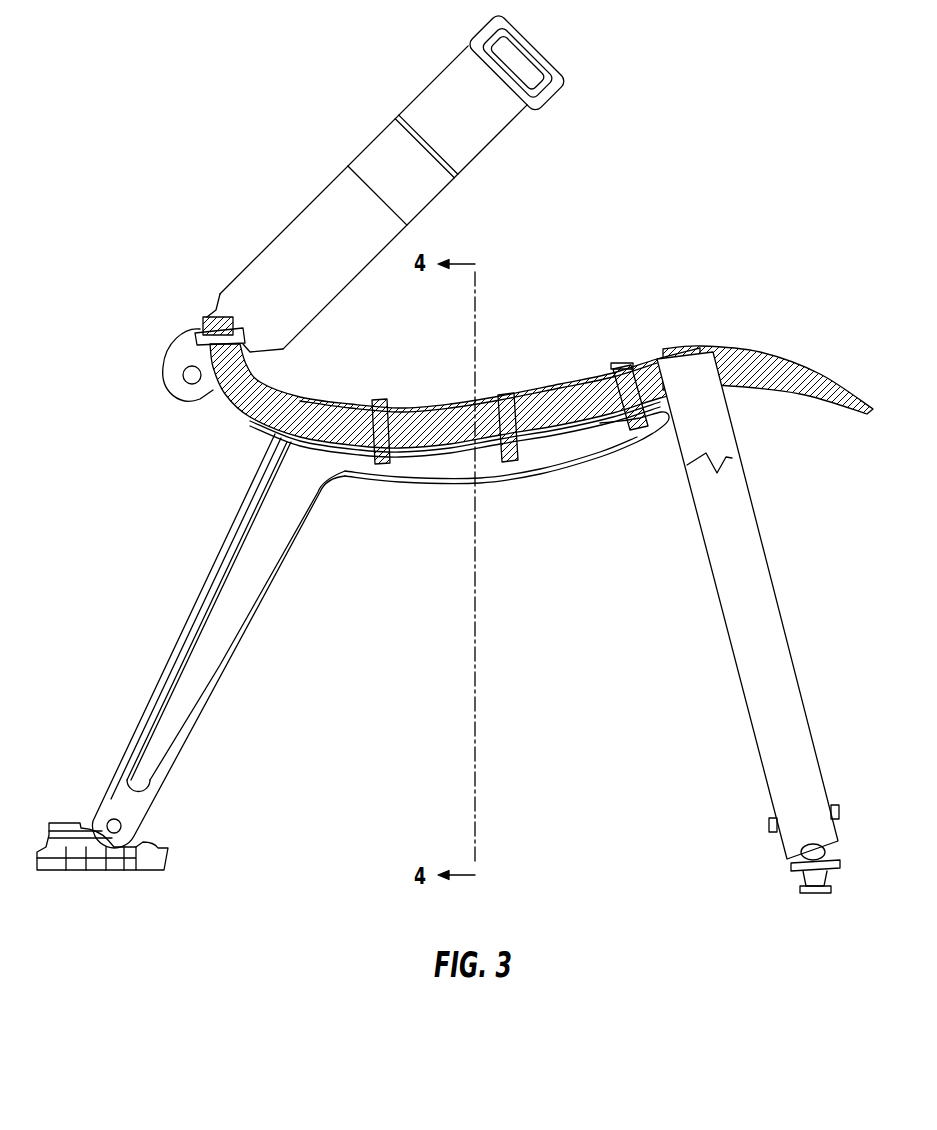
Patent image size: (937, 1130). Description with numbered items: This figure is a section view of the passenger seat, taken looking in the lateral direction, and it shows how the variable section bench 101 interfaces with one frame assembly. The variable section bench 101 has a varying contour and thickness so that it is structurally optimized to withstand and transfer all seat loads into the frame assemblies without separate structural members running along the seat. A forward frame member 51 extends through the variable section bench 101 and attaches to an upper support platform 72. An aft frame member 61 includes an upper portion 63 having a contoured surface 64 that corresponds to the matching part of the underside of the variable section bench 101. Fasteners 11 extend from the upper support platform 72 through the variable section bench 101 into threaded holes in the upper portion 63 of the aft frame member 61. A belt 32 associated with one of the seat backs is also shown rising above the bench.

The fasteners 11 is at (378, 398).
The belt 32 is at (327, 200).
The forward frame member 51 is at (737, 620).
The aft frame member 61 is at (218, 615).
The upper portion 63 is at (566, 455).
The contoured surface 64 is at (262, 424).
The upper support platform 72 is at (567, 380).
The variable section bench 101 is at (798, 360).